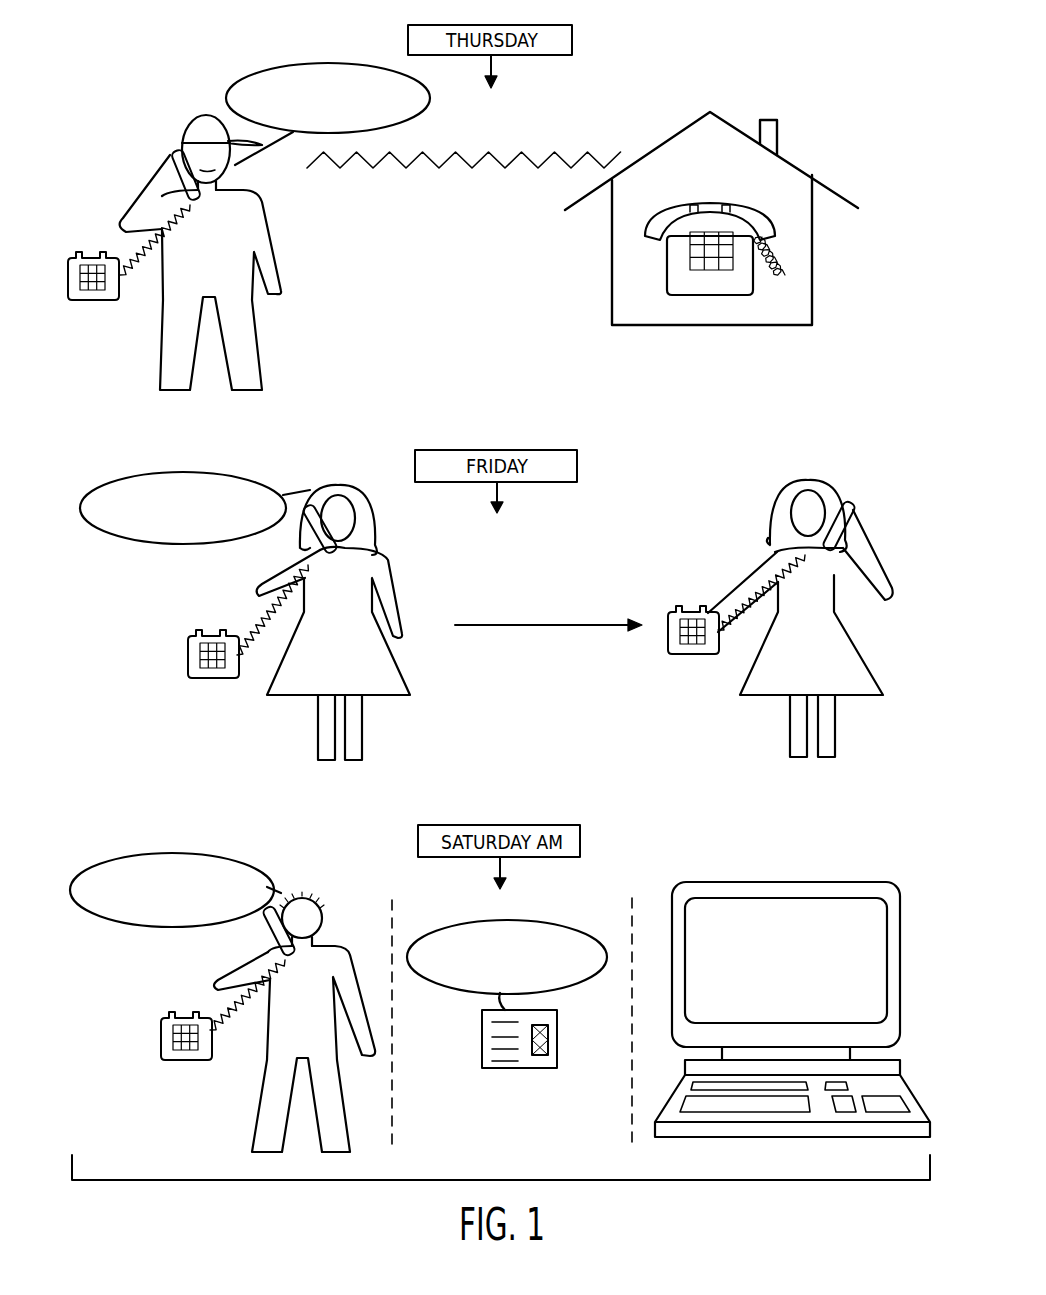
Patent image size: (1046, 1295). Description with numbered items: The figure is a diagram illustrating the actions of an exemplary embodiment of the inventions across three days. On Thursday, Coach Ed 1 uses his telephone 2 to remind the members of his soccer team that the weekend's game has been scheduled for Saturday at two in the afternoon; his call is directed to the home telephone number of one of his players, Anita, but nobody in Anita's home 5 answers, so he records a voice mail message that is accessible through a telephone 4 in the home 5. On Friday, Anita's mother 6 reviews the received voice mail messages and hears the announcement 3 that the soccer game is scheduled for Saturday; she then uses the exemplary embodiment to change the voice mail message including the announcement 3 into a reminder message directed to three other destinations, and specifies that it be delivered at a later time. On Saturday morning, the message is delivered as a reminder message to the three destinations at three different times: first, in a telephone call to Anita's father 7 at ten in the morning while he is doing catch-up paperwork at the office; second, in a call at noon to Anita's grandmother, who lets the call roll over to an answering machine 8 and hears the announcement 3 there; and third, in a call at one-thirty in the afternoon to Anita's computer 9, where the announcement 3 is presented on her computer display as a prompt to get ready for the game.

The Coach Ed 1 is at (269, 222).
The telephone 2 is at (92, 252).
The announcement 3 is at (431, 98).
The telephone 4 is at (758, 208).
The home 5 is at (812, 168).
The mother 6 is at (360, 492).
The father 7 is at (325, 912).
The answering machine 8 is at (558, 1032).
The computer 9 is at (866, 882).